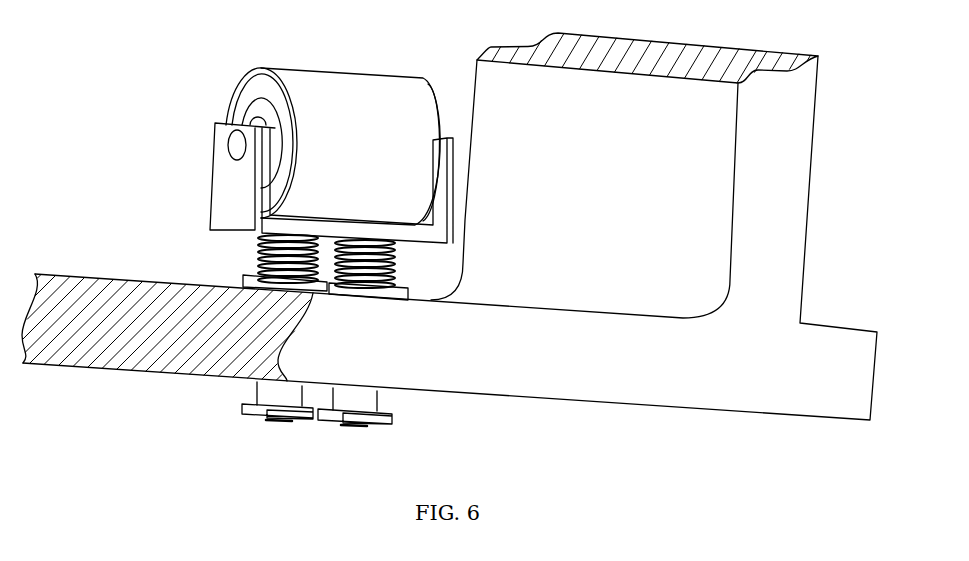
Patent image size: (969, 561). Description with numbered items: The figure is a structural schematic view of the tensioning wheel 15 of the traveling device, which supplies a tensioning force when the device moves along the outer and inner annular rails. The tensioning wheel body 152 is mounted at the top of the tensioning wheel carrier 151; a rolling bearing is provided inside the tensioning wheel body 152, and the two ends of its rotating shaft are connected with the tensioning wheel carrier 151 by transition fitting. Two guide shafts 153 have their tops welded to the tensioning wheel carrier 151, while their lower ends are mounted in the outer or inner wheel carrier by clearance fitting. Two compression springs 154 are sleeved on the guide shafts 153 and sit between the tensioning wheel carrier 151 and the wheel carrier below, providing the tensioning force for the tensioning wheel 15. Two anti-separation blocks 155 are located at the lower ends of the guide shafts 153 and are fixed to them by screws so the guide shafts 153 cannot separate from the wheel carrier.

The tensioning wheel 15 is at (228, 121).
The tensioning wheel carrier 151 is at (221, 197).
The tensioning wheel body 152 is at (300, 68).
The guide shafts 153 is at (263, 392).
The compression springs 154 is at (258, 250).
The anti-separation blocks 155 is at (384, 419).